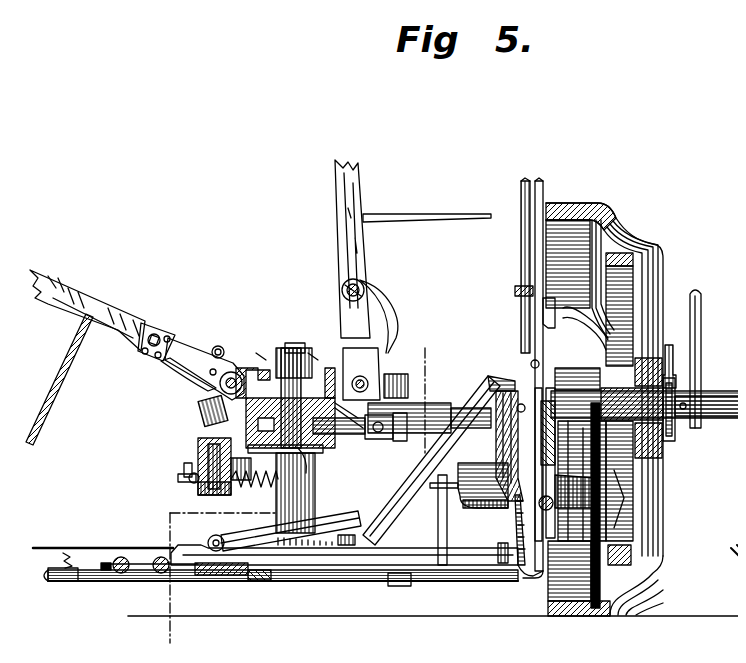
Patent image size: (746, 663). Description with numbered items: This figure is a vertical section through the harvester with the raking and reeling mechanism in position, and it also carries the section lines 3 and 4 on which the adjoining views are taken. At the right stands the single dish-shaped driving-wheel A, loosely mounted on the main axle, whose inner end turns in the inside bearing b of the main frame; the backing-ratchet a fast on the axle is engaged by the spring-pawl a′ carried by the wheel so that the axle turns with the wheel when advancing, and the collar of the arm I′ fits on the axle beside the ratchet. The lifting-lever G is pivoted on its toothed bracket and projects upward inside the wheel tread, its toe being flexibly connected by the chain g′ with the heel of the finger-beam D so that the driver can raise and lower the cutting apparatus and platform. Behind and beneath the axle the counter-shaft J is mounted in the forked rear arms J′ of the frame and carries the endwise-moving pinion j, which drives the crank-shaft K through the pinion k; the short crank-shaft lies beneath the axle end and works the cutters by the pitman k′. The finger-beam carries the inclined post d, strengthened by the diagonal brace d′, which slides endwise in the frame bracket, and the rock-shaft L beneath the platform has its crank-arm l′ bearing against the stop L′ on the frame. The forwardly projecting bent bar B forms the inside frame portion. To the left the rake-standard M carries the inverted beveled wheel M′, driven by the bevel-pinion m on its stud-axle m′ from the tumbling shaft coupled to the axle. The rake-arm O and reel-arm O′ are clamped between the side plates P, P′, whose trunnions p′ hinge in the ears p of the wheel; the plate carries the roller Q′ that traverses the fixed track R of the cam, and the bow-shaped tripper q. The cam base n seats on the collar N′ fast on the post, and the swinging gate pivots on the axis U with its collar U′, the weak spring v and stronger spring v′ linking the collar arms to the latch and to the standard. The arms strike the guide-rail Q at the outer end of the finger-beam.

The section line 4 is at (293, 497).
The reel-arm O′ is at (85, 357).
The side clamping-plate P is at (191, 361).
The lug or ear p is at (228, 362).
The tripper-piece q is at (170, 370).
The roller Q′ is at (197, 400).
The rake-arm O is at (413, 249).
The side clamping-plate P′ is at (353, 306).
The guide-rail Q is at (368, 304).
The trunnion p′ is at (342, 368).
The inverted beveled toothed wheel M′ is at (258, 360).
The rake-standard M is at (308, 492).
The vertical pivot U is at (190, 455).
The light coiled spring v is at (177, 473).
The adjustable collar U′ is at (195, 478).
The strong coiled spring v′ is at (255, 480).
The centrally-open base n is at (306, 464).
The flange or collar N′ is at (308, 470).
The bevel-pinion m is at (362, 430).
The stud-axle m′ is at (390, 432).
The main fixed track R is at (395, 390).
The pitman k′ is at (385, 478).
The diagonal brace d′ is at (455, 458).
The counter-shaft J is at (483, 485).
The stop or short arm L′ is at (430, 487).
The crank-arm l′ is at (427, 527).
The post d is at (480, 510).
The chain g′ is at (506, 510).
The driving-wheel A is at (642, 403).
The lifting-lever G is at (537, 183).
The section line 3 is at (560, 297).
The inside bearing b is at (560, 390).
The backing-ratchet a is at (660, 432).
The spring-pawl a′ is at (661, 338).
The arm I′ is at (694, 320).
The endwise-moving pinion j is at (612, 478).
The forked rear arm of main frame J′ is at (612, 500).
The crank-shaft K is at (542, 503).
The pinion k is at (541, 464).
The angle-plate or doubly-bent bar B is at (540, 540).
The rock-shaft L is at (52, 573).
The plate H′ is at (268, 575).
The finger-beam D is at (358, 548).